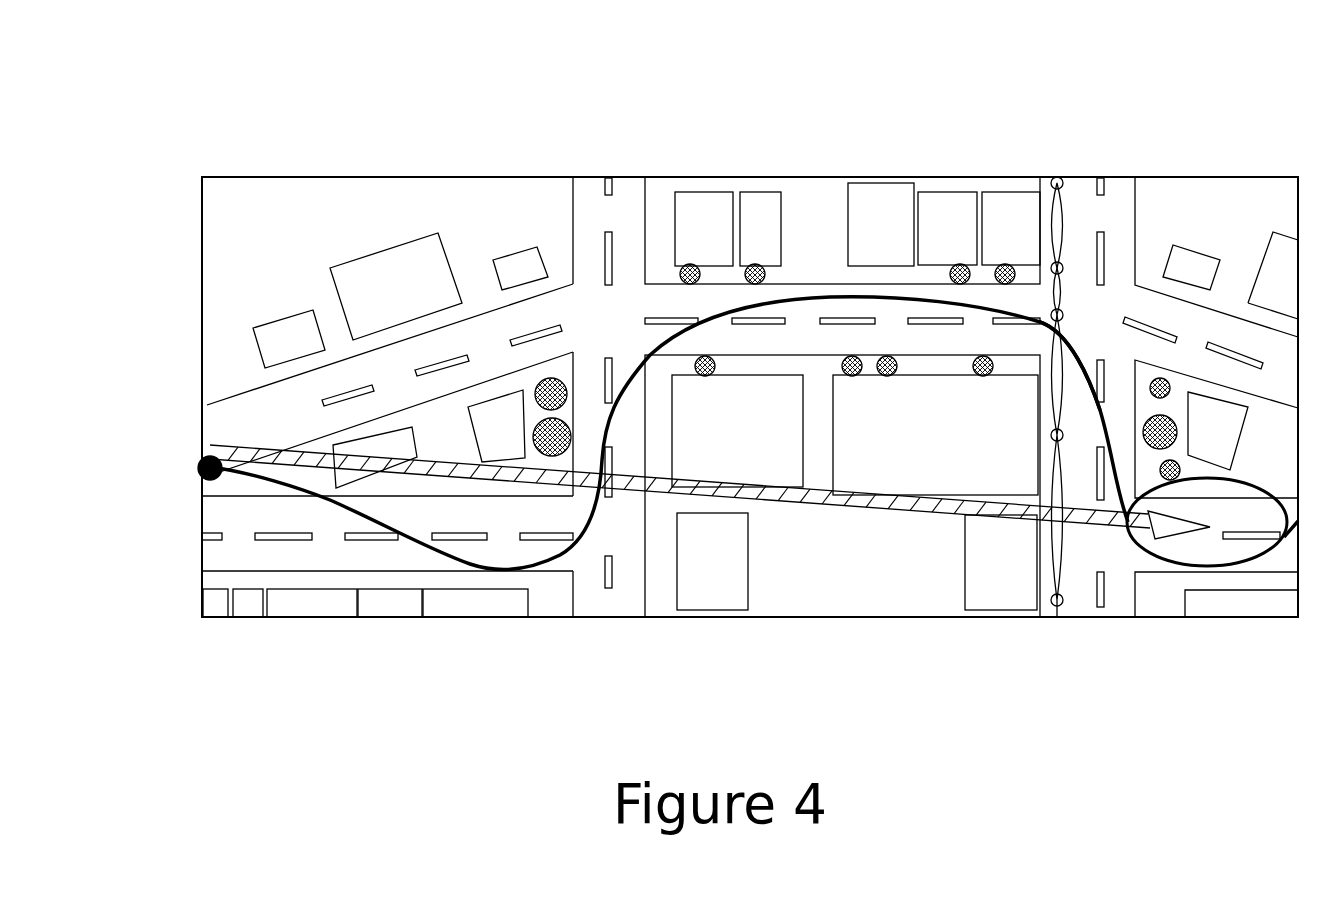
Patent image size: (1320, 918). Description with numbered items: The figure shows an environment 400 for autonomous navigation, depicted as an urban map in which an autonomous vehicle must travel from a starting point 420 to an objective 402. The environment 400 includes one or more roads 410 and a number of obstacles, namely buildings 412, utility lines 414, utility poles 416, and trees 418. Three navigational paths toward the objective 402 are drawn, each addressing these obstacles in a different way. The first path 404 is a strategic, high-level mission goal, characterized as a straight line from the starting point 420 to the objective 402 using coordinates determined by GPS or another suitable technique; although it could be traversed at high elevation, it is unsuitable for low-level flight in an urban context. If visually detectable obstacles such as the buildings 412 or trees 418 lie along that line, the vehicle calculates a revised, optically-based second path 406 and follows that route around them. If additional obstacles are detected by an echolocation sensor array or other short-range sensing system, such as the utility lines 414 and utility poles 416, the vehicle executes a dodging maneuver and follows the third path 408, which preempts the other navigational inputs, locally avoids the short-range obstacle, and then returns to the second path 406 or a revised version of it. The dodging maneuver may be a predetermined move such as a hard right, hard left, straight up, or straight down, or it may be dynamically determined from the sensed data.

The environment 400 is at (240, 130).
The objective 402 is at (1243, 520).
The first path 404 is at (875, 503).
The second path 406 is at (478, 572).
The third path 408 is at (1066, 315).
The roads 410 is at (623, 320).
The buildings 412 is at (953, 435).
The utility lines 414 is at (1050, 214).
The utility poles 416 is at (1058, 178).
The trees 418 is at (550, 378).
The starting point 420 is at (200, 470).